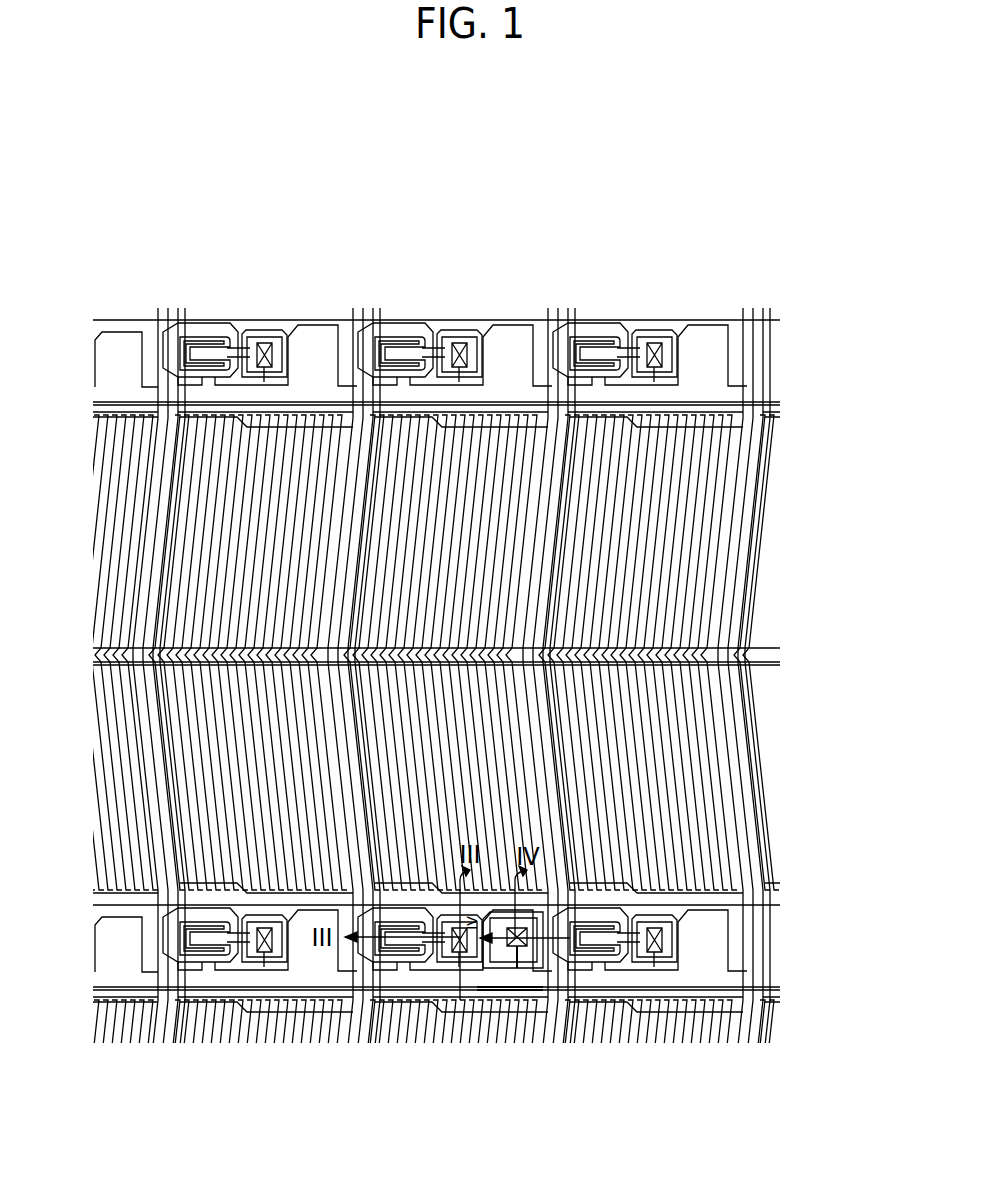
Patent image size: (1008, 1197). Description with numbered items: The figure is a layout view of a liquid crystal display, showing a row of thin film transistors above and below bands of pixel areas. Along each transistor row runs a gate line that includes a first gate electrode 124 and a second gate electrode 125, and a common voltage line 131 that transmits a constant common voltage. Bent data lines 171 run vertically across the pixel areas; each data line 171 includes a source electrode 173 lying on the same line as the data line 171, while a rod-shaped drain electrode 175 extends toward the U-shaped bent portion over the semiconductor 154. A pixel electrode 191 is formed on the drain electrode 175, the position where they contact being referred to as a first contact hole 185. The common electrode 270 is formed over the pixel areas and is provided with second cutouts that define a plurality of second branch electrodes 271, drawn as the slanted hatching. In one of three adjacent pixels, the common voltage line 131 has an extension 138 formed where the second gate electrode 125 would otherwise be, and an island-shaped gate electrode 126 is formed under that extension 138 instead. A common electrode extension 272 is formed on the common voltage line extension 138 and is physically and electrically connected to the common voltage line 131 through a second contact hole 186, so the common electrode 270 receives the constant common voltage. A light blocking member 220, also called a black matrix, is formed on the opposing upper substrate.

The first gate electrode 124 is at (548, 322).
The second gate electrode 125 is at (710, 330).
The island-shaped gate electrode 126 is at (518, 968).
The common voltage line 131 is at (735, 648).
The common voltage line extension 138 is at (545, 958).
The semiconductor 154 is at (620, 342).
The data line 171 is at (560, 488).
The source electrode 173 is at (588, 330).
The drain electrode 175 is at (640, 347).
The first contact hole 185 is at (653, 345).
The second contact hole 186 is at (515, 946).
The pixel electrode 191 is at (496, 320).
The light blocking member 220 is at (712, 430).
The common electrode 270 is at (683, 903).
The second branch electrodes 271 is at (695, 745).
The common electrode extension 272 is at (495, 962).